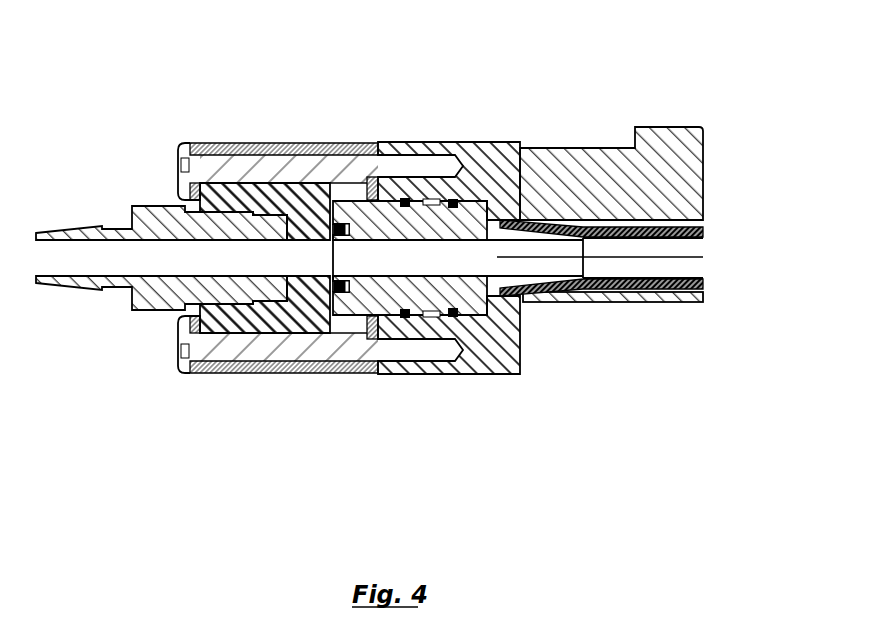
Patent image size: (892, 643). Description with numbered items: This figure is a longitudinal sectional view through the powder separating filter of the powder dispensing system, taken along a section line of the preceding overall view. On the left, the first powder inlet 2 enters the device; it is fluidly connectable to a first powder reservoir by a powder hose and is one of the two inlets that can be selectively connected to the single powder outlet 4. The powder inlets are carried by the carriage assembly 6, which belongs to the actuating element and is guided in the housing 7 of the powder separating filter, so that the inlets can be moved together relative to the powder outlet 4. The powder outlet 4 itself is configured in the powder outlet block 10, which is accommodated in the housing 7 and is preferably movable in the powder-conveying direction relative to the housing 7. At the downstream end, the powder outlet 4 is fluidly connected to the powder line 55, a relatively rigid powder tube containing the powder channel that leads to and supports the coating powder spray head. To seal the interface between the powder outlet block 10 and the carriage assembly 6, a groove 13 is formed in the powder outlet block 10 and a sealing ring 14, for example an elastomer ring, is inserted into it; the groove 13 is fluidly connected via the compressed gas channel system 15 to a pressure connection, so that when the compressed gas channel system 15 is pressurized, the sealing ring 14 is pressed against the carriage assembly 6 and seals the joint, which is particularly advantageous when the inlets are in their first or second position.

The first powder inlet 2 is at (157, 257).
The powder outlet 4 is at (560, 250).
The carriage assembly 6 is at (247, 192).
The housing 7 is at (270, 150).
The powder outlet block 10 is at (463, 298).
The groove 13 is at (344, 224).
The sealing ring 14 is at (336, 226).
The compressed gas channel system 15 is at (428, 203).
The powder line 55 is at (637, 232).